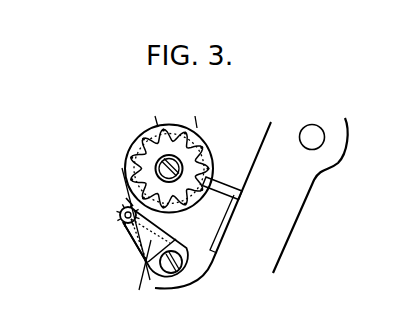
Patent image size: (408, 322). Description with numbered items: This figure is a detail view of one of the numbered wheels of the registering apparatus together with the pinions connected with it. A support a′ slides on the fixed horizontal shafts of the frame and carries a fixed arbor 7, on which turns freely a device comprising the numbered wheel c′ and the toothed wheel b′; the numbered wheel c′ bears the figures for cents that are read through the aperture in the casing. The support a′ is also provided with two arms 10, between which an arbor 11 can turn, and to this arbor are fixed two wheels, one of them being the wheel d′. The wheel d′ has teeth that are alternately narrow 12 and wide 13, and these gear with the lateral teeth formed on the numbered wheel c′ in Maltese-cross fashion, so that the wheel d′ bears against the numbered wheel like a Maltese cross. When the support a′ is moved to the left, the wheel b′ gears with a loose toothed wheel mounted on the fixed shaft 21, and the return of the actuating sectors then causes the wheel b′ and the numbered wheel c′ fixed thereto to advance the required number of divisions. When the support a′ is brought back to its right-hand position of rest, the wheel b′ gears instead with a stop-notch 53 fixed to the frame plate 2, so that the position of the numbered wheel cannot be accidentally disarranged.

The vertical plate 2 is at (251, 203).
The fixed shaft 21 is at (304, 145).
The stop-notch 53 is at (224, 183).
The numbered wheel c′ is at (127, 144).
The toothed wheel b′ is at (174, 127).
The fixed arbor 7 is at (182, 167).
The arms 10 is at (137, 242).
The support a′ is at (174, 246).
The wide teeth 13 is at (118, 209).
The narrow teeth 12 is at (115, 218).
The arbor 11 is at (130, 201).
The wheel d′ is at (129, 240).